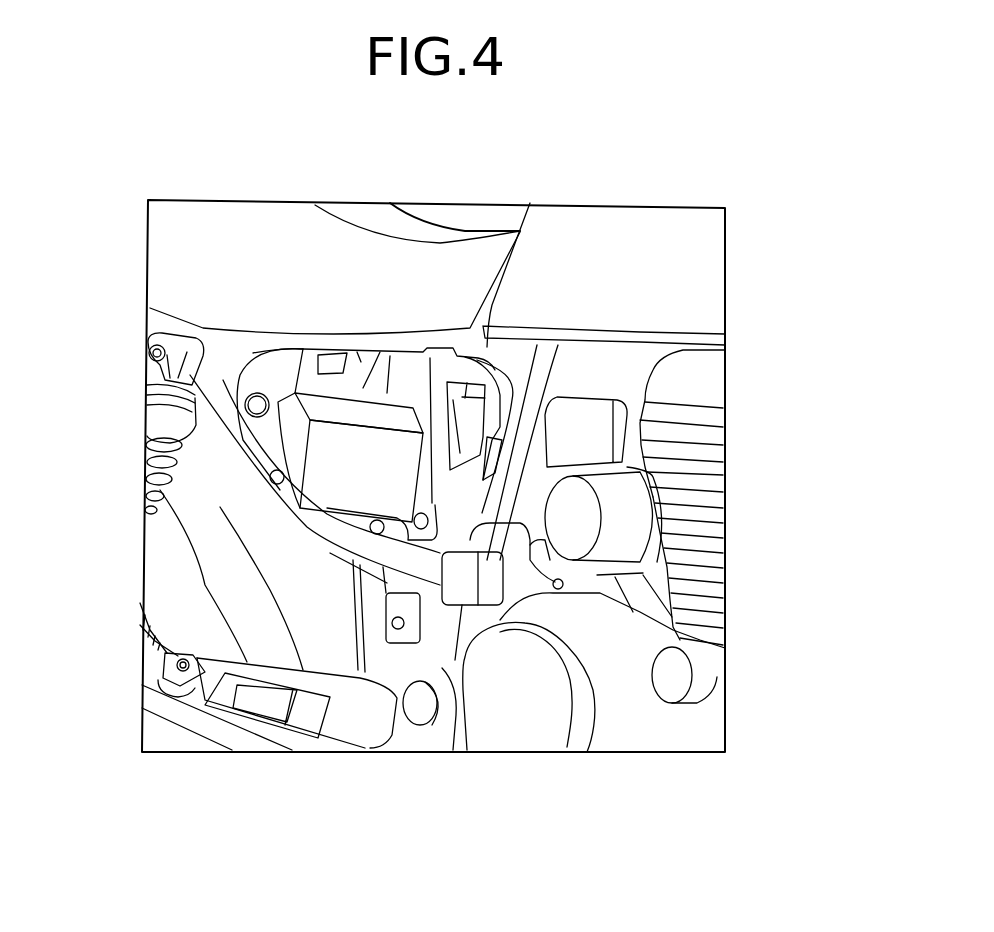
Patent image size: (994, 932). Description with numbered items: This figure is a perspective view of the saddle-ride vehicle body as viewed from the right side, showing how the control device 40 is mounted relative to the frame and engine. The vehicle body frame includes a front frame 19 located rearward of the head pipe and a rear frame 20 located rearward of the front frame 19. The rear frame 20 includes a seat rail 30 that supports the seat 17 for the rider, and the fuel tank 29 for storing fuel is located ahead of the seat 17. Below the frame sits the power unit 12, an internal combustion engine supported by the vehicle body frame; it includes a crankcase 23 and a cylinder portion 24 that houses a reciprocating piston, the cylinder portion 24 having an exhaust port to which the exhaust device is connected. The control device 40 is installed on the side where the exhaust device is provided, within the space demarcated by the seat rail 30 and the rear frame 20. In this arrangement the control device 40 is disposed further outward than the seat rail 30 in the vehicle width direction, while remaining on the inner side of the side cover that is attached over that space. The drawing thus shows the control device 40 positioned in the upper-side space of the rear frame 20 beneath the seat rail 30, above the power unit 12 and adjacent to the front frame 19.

The power unit 12 is at (718, 612).
The seat 17 is at (426, 262).
The front frame 19 is at (552, 362).
The rear frame 20 is at (225, 398).
The crankcase 23 is at (536, 725).
The cylinder portion 24 is at (693, 465).
The fuel tank 29 is at (640, 240).
The seat rail 30 is at (487, 347).
The control device 40 is at (330, 455).